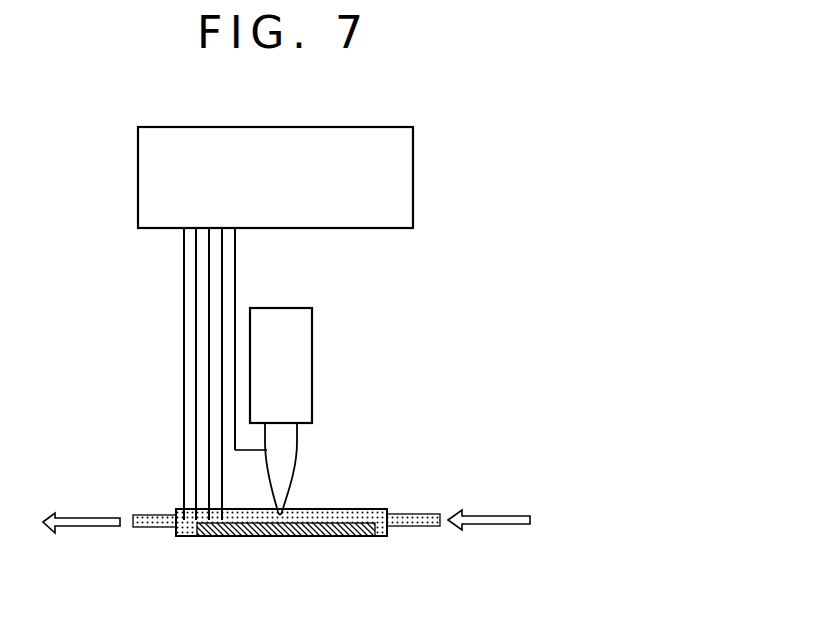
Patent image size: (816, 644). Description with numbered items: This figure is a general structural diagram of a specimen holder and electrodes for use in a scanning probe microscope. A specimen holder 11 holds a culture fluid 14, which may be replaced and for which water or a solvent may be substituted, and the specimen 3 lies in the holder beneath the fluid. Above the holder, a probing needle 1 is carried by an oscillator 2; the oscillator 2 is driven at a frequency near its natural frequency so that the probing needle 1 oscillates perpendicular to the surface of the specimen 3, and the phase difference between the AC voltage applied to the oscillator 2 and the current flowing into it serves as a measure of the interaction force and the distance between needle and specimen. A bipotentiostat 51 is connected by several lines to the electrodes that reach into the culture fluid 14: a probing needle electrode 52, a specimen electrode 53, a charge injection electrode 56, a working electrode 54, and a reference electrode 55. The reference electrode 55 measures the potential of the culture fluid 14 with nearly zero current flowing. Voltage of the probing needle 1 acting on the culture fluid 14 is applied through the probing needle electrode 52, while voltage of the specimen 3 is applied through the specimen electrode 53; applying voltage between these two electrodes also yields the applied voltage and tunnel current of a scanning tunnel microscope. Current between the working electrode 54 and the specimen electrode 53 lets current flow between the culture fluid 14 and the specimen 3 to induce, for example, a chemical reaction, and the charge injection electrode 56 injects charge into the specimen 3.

The bipotentiostat 51 is at (398, 183).
The probing needle electrode 52 is at (235, 285).
The specimen electrode 53 is at (222, 317).
The charge injection electrode 56 is at (209, 351).
The working electrode 54 is at (196, 387).
The reference electrode 55 is at (184, 418).
The oscillator 2 is at (295, 352).
The probing needle 1 is at (282, 460).
The specimen holder 11 is at (177, 508).
The culture fluid 14 is at (187, 537).
The specimen 3 is at (228, 537).